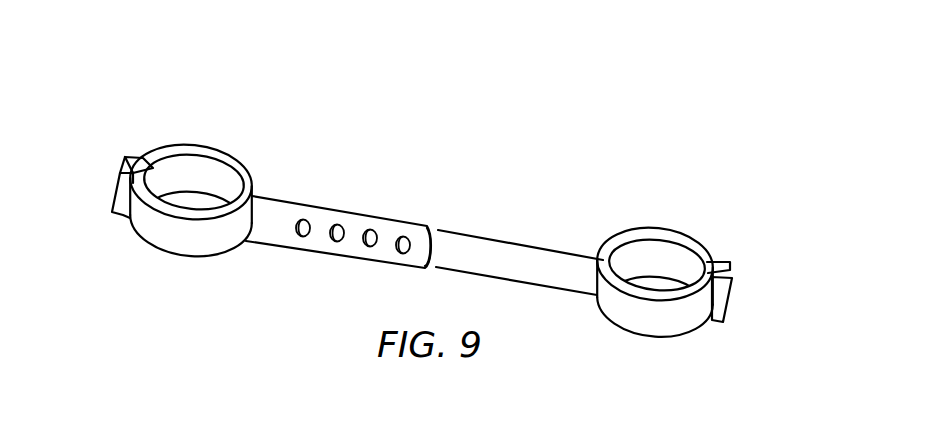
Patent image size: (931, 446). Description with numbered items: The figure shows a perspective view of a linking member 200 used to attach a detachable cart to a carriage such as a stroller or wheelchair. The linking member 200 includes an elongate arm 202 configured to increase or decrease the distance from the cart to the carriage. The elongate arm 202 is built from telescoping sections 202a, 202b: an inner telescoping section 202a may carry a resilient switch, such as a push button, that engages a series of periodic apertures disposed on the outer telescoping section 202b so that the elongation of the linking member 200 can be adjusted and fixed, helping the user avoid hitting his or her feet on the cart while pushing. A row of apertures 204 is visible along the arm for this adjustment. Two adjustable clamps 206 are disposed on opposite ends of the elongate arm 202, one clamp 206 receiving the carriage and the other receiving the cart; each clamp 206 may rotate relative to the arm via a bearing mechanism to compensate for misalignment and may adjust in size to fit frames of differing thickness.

The linking member 200 is at (504, 121).
The elongate arm 202 is at (393, 196).
The inner telescoping section 202a is at (280, 196).
The outer telescoping section 202b is at (520, 244).
The adjustment holes 204 is at (339, 283).
The adjustable clamp 206 is at (134, 138).